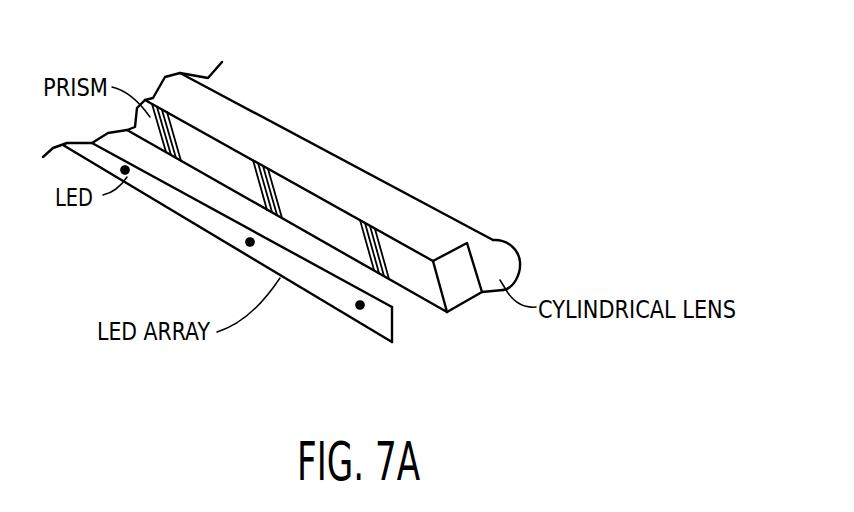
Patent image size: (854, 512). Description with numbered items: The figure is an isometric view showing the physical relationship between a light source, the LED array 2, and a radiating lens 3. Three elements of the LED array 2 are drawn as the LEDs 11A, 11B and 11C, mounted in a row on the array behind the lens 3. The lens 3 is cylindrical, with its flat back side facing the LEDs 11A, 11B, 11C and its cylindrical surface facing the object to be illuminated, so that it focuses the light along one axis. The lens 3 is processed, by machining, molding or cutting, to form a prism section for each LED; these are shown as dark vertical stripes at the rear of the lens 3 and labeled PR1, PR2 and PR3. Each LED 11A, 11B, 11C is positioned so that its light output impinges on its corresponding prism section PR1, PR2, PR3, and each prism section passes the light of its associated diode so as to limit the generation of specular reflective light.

The LED array 2 is at (400, 345).
The radiating lens 3 is at (532, 245).
The LED 11A is at (360, 309).
The LED 11B is at (247, 245).
The LED 11C is at (126, 175).
The prism section PR1 is at (393, 254).
The prism section PR2 is at (292, 203).
The prism section PR3 is at (177, 139).